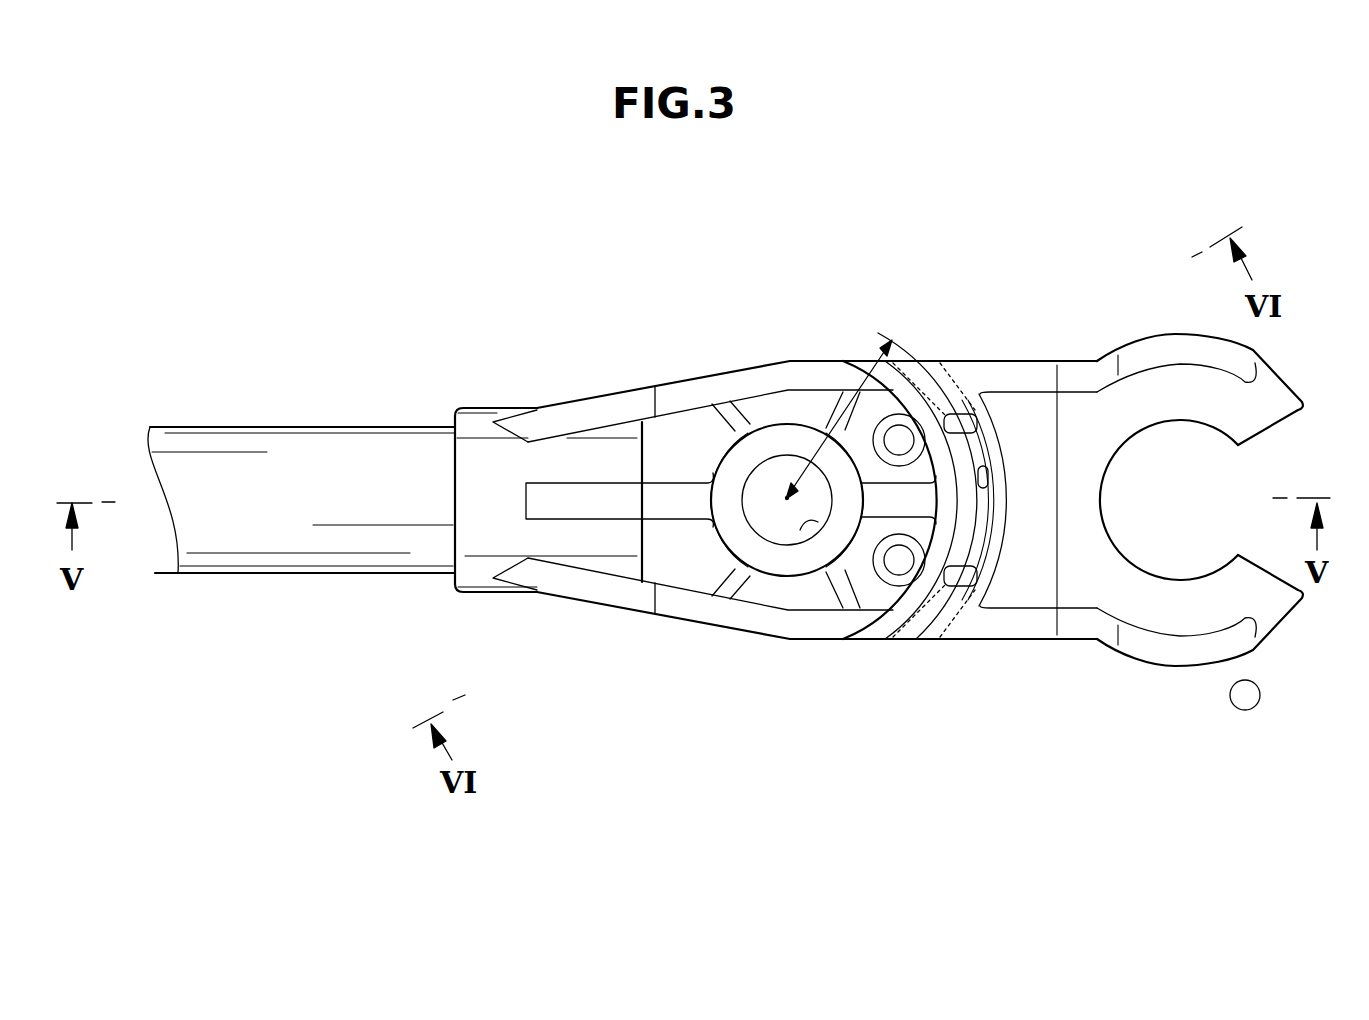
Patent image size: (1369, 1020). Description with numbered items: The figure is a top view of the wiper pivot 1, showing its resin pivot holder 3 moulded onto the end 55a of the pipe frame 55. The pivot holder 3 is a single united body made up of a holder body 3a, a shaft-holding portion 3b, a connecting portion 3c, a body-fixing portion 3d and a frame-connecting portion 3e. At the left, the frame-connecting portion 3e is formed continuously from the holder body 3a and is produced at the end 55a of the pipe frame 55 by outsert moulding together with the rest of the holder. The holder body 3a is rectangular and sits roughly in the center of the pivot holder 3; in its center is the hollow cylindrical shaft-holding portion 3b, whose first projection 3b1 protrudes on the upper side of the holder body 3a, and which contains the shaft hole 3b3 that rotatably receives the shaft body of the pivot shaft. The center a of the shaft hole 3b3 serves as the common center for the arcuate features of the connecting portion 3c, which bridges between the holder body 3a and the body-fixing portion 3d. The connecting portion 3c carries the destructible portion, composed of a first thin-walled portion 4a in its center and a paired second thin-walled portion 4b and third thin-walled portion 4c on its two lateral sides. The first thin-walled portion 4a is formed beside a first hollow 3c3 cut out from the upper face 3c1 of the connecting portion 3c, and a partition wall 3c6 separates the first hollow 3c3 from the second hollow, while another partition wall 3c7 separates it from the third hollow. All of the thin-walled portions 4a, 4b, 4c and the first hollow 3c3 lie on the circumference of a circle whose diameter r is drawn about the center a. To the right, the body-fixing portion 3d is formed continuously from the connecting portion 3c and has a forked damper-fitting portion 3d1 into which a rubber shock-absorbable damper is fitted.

The wiper pivot 1 is at (1125, 143).
The pipe frame 55 is at (197, 425).
The end of the pipe frame 55a is at (430, 555).
The frame-connecting portion 3e is at (478, 405).
The pivot holder 3 is at (832, 640).
The holder body 3a is at (792, 627).
The shaft-holding portion 3b is at (718, 400).
The first projection 3b1 is at (797, 437).
The shaft hole 3b3 is at (808, 522).
The center a is at (785, 495).
The diameter r1 r is at (872, 370).
The connecting portion 3c is at (895, 640).
The upper face of the connecting portion 3c1 is at (937, 362).
The first hollow 3c3 is at (957, 483).
The partition wall 3c6 is at (970, 405).
The partition wall 3c7 is at (985, 607).
The first thin-walled portion 4a is at (968, 540).
The second thin-walled portion 4b is at (950, 412).
The third thin-walled portion 4c is at (925, 625).
The body-fixing portion 3d is at (1293, 623).
The damper-fitting portion 3d1 is at (1142, 587).